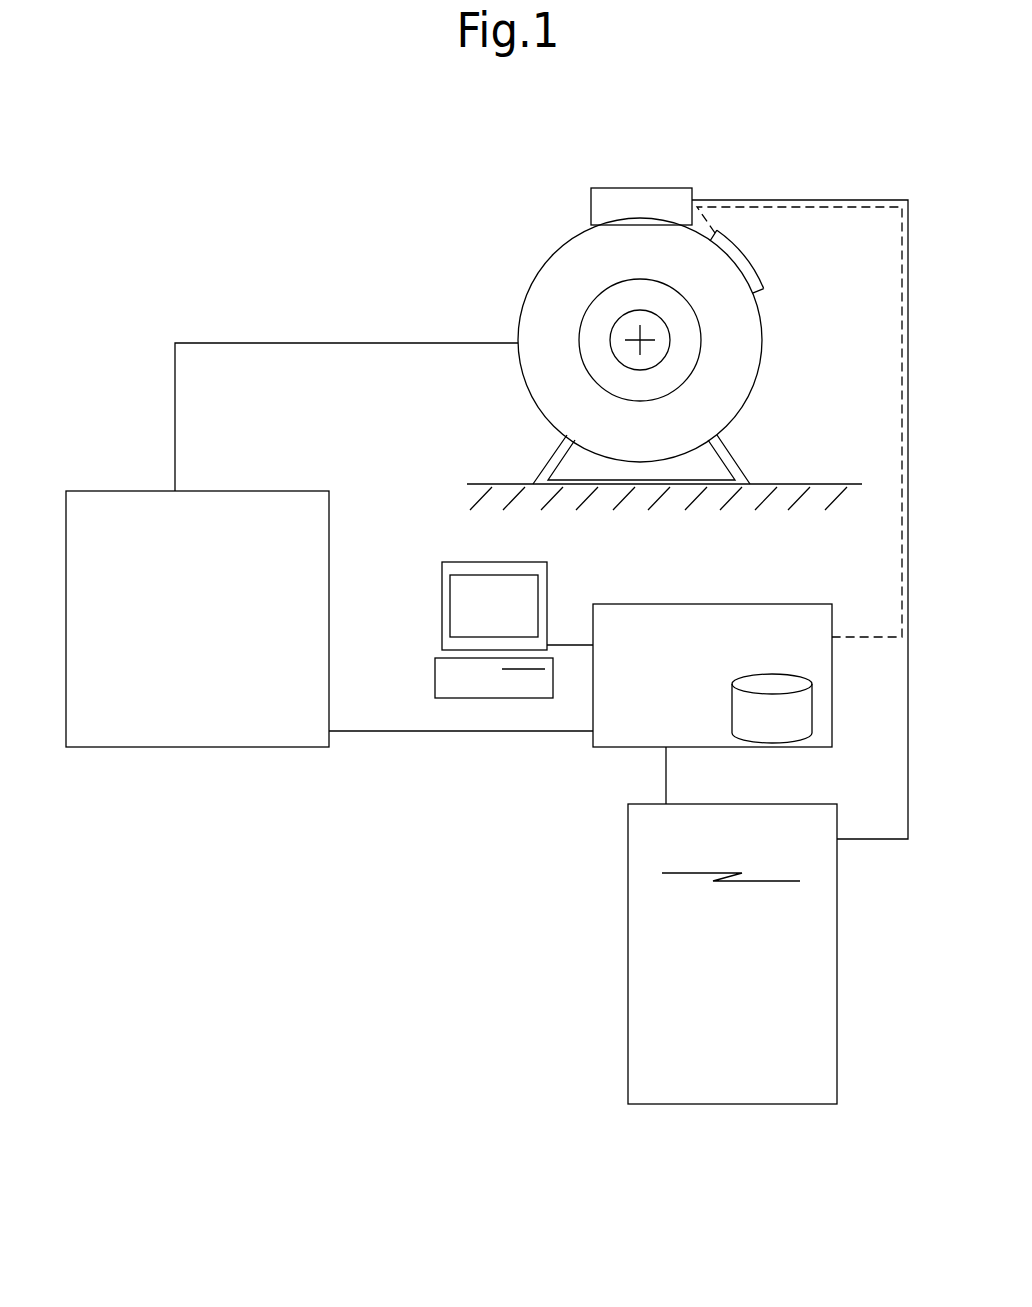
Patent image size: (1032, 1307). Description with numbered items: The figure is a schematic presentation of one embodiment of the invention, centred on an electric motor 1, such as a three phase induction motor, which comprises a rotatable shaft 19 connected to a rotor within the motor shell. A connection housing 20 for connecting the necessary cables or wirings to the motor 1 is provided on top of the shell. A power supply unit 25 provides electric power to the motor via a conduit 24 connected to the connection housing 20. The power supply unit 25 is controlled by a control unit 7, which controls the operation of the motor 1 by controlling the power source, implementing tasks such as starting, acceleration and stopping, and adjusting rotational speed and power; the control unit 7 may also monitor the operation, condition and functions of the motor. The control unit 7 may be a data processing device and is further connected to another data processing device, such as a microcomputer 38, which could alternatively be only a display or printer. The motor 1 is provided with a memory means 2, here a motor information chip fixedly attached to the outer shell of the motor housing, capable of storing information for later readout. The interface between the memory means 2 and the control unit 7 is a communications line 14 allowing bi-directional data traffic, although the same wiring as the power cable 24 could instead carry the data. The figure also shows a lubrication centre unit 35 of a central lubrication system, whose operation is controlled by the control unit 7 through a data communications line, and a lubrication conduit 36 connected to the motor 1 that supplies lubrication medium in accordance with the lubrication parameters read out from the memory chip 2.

The electric motor 1 is at (588, 260).
The memory means 2 is at (748, 262).
The control unit 7 is at (618, 738).
The communications line 14 is at (815, 207).
The rotatable shaft 19 is at (620, 333).
The connection housing 20 is at (610, 193).
The conduit 24 is at (737, 200).
The power supply unit 25 is at (673, 1083).
The lubrication centre unit 35 is at (112, 490).
The lubrication conduit 36 is at (207, 342).
The microcomputer 38 is at (447, 690).